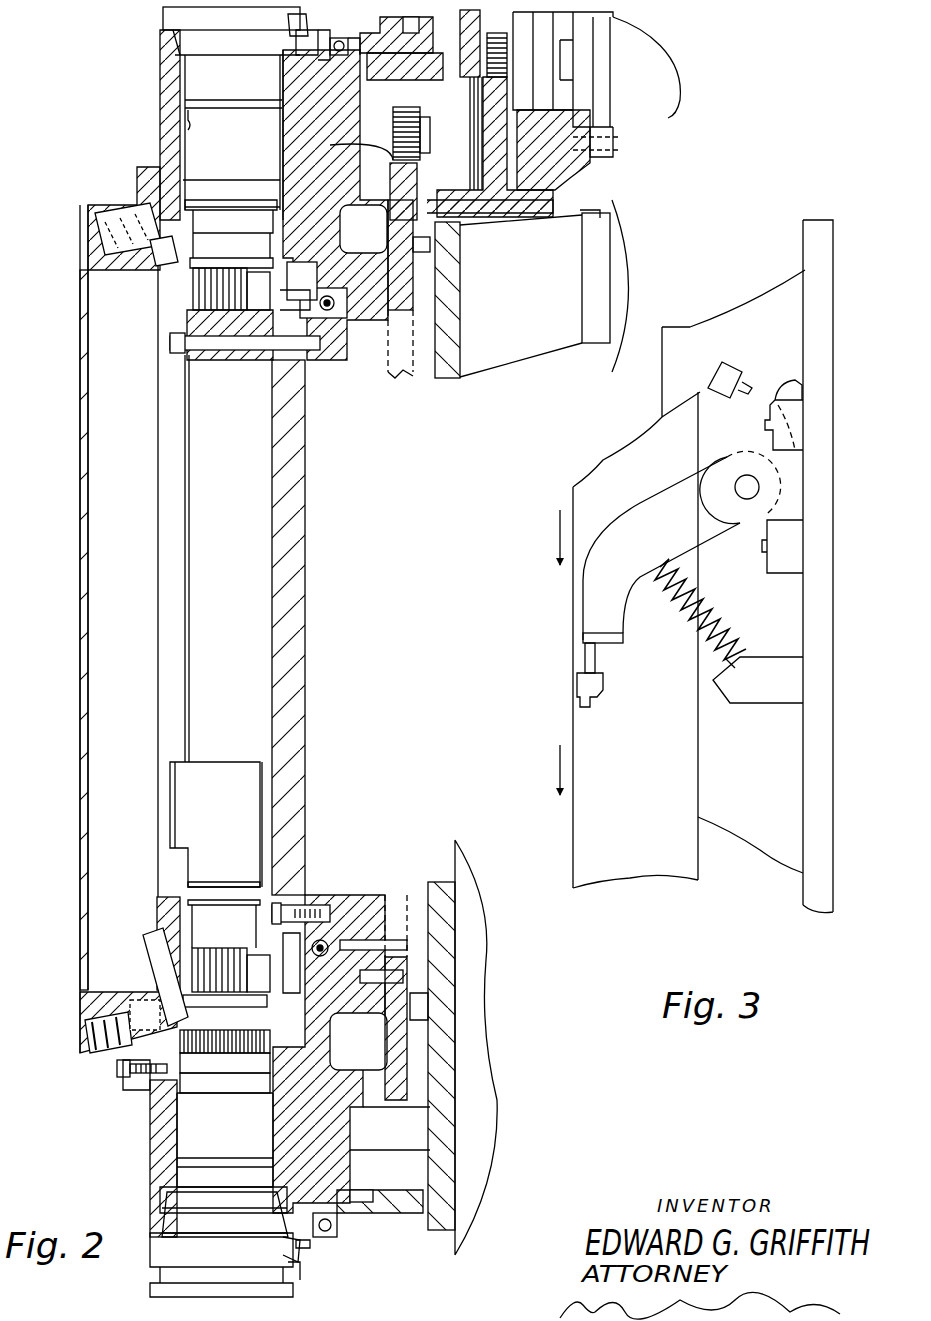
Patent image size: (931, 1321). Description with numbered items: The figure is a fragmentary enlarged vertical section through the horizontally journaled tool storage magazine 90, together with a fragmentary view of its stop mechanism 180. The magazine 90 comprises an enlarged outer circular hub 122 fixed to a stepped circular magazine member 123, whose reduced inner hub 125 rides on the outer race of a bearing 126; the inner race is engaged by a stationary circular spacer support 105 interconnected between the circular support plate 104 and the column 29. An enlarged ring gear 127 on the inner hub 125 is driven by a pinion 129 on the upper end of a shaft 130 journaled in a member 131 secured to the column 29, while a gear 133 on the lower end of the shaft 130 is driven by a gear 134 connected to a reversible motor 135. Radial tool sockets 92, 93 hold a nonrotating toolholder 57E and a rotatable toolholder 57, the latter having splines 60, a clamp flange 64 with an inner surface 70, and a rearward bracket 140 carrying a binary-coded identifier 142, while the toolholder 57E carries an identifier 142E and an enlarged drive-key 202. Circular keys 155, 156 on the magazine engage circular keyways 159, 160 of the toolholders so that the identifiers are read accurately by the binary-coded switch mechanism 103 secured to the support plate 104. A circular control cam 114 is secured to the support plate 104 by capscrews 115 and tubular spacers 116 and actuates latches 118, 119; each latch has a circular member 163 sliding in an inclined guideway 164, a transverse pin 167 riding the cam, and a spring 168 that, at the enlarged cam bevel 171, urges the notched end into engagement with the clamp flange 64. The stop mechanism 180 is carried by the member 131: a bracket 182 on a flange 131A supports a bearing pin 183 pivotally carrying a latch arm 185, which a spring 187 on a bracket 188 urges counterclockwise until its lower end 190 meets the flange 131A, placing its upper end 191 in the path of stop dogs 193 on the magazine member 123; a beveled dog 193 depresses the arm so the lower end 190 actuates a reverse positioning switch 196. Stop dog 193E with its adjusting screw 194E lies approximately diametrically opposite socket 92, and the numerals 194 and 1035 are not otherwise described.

In FIG. 2, the column 29 is at (450, 372).
In FIG. 2, the toolholder 57 is at (233, 1144).
In FIG. 2, the nonrotating toolholder 57E is at (256, 162).
In FIG. 2, the splines 60 is at (335, 1040).
In FIG. 2, the clamp flange 64 is at (267, 1000).
In FIG. 2, the surface 70 is at (248, 1013).
In FIG. 2, the tool storage magazine 90 is at (116, 188).
In FIG. 2, the tool socket 92 is at (186, 128).
In FIG. 2, the tool socket 93 is at (180, 1106).
In FIG. 2, the binary-coded switch mechanism 103 is at (193, 758).
In FIG. 2, the circular support plate 104 is at (292, 795).
In FIG. 2, the circular spacer support 105 is at (345, 905).
In FIG. 2, the circular control cam 114 is at (175, 390).
In FIG. 2, the capscrews 115 is at (168, 343).
In FIG. 2, the tubular spacers 116 is at (243, 350).
In FIG. 2, the latch 118 is at (153, 270).
In FIG. 2, the latch 119 is at (143, 983).
In FIG. 2, the outer circular hub 122 is at (140, 198).
In FIG. 2, the circular magazine member 123 is at (170, 152).
In FIG. 3, the circular magazine member 123 is at (605, 885).
In FIG. 2, the inner hub 125 is at (375, 300).
In FIG. 2, the bearing 126 is at (330, 318).
In FIG. 2, the ring gear 127 is at (407, 1100).
In FIG. 2, the pinion 129 is at (363, 229).
In FIG. 2, the shaft 130 is at (420, 150).
In FIG. 2, the member 131 is at (470, 100).
In FIG. 3, the member 131 is at (790, 850).
In FIG. 2, the flange 131A is at (480, 120).
In FIG. 3, the flange 131A is at (803, 243).
In FIG. 2, the gear 133 is at (520, 175).
In FIG. 2, the gear 134 is at (500, 48).
In FIG. 2, the reversible motor 135 is at (668, 116).
In FIG. 2, the bracket 140 is at (212, 925).
In FIG. 2, the binary-coded identifier 142 is at (205, 942).
In FIG. 2, the binary-coded identifier 142E is at (203, 318).
In FIG. 2, the circular key 155 is at (300, 45).
In FIG. 2, the circular key 156 is at (300, 1250).
In FIG. 2, the circular keyway 159 is at (300, 22).
In FIG. 2, the circular keyway 160 is at (292, 1263).
In FIG. 2, the circular member 163 is at (135, 1003).
In FIG. 2, the circular guideway 164 is at (125, 1070).
In FIG. 2, the circular pin 167 is at (138, 945).
In FIG. 2, the spring 168 is at (110, 1030).
In FIG. 2, the enlarged cam bevel 171 is at (142, 940).
In FIG. 2, the stop mechanism 180 is at (378, 30).
In FIG. 3, the stop mechanism 180 is at (730, 300).
In FIG. 2, the bracket 182 is at (458, 35).
In FIG. 3, the bracket 182 is at (780, 565).
In FIG. 2, the bearing pin 183 is at (420, 62).
In FIG. 3, the bearing pin 183 is at (735, 482).
In FIG. 2, the latch arm 185 is at (348, 100).
In FIG. 3, the latch arm 185 is at (650, 532).
In FIG. 3, the spring 187 is at (700, 650).
In FIG. 3, the bracket 188 is at (780, 695).
In FIG. 3, the lower end 190 is at (790, 392).
In FIG. 3, the upper end 191 is at (590, 617).
In FIG. 2, the stop dog 193 is at (345, 60).
In FIG. 3, the stop dog 193 is at (590, 688).
In FIG. 2, the stop dog 193E is at (340, 1222).
In FIG. 2, the screw 194 is at (338, 55).
In FIG. 3, the screw 194 is at (588, 660).
In FIG. 2, the adjusting screw 194E is at (318, 1232).
In FIG. 3, the reverse positioning switch 196 is at (715, 375).
In FIG. 2, the drive-key 202 is at (172, 42).
In FIG. 2, the ring 1035 is at (167, 935).